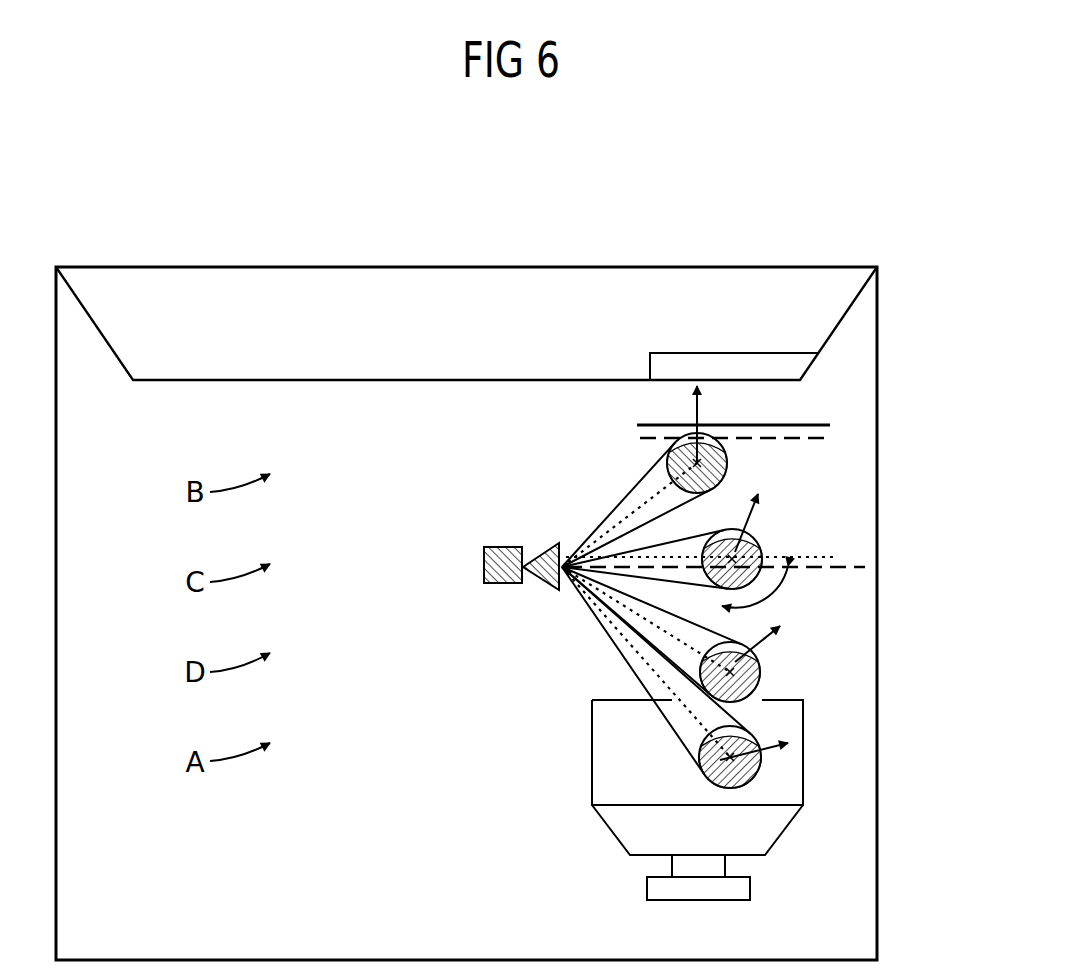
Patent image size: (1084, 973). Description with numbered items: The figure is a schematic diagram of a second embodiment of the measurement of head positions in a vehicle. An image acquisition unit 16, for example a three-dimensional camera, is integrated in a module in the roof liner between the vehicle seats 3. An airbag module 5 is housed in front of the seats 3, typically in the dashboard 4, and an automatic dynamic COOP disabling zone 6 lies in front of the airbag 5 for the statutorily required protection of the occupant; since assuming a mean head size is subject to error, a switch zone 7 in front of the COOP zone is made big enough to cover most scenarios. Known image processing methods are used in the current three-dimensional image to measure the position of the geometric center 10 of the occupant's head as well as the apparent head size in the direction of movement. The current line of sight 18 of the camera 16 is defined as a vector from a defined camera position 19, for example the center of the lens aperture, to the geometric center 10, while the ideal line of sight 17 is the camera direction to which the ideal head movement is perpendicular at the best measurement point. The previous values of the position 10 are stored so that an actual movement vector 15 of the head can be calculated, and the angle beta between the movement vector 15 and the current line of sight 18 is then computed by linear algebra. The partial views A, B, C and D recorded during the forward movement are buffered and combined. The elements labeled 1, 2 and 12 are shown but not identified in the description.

The apparatus 1 is at (467, 230).
The process chamber 2 is at (419, 716).
The vehicle seats 3 is at (610, 760).
The dashboard 4 is at (436, 363).
The airbag module 5 is at (700, 367).
The automatic dynamic COOP disabling zone 6 is at (810, 428).
The switch zone 7 is at (810, 438).
The geometric center of the head 10 is at (668, 466).
The deflection element 12 is at (670, 440).
The actual movement vector 15 is at (752, 515).
The image acquisition unit 16 is at (484, 576).
The ideal line of sight 17 is at (828, 570).
The current line of sight 18 is at (813, 557).
The defined camera position 19 is at (552, 538).